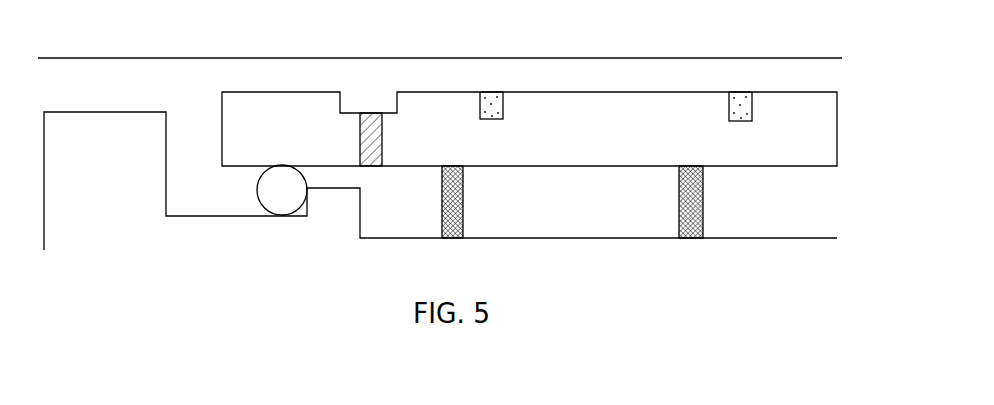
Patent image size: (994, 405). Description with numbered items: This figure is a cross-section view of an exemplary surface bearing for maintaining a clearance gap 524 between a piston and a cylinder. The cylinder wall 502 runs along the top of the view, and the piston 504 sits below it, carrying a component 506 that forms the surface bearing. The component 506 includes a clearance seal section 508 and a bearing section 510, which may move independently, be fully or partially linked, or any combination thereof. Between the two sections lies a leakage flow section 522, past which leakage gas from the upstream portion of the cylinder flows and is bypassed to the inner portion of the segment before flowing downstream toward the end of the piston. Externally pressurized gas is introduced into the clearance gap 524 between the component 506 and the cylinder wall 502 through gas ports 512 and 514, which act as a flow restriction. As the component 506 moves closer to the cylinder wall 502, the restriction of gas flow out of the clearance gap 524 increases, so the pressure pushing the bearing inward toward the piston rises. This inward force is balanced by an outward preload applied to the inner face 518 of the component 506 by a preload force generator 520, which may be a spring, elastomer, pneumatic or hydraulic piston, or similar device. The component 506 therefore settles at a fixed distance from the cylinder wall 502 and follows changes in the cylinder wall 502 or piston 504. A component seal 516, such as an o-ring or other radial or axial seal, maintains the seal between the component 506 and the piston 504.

The cylinder wall 502 is at (127, 58).
The piston 504 is at (100, 112).
The component 506 is at (613, 91).
The clearance seal section 508 is at (279, 91).
The bearing section 510 is at (437, 91).
The gas port 512 is at (492, 92).
The gas port 514 is at (740, 92).
The component seal 516 is at (257, 192).
The inner face 518 is at (594, 166).
The preload force generator 520 is at (703, 200).
The leakage flow section 522 is at (370, 113).
The clearance gap 524 is at (250, 78).